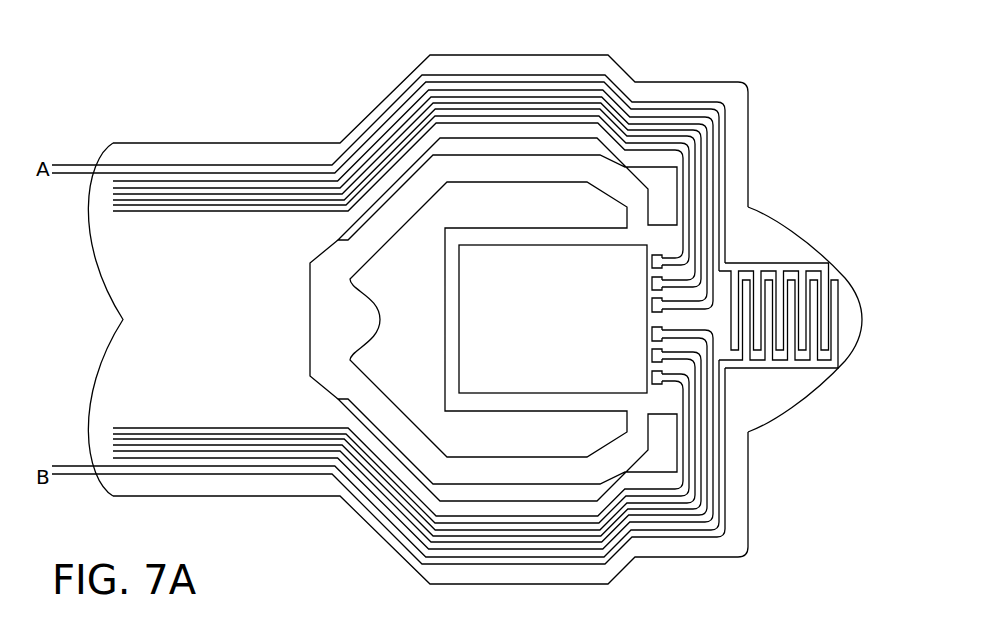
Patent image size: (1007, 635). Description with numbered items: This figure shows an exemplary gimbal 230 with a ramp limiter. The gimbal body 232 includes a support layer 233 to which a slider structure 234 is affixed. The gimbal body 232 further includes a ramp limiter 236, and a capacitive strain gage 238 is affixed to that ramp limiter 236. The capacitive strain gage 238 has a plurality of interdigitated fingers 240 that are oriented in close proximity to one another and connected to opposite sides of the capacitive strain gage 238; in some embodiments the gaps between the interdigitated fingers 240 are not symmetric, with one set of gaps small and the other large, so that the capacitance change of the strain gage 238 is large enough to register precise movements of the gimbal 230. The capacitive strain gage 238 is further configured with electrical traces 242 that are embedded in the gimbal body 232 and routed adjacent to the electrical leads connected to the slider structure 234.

The gimbal 230 is at (168, 50).
The gimbal body 232 is at (445, 294).
The support layer 233 is at (388, 203).
The slider structure 234 is at (518, 395).
The ramp limiter 236 is at (780, 428).
The capacitive strain gage 238 is at (776, 256).
The interdigitated fingers 240 is at (853, 321).
The electrical traces 242 is at (146, 158).